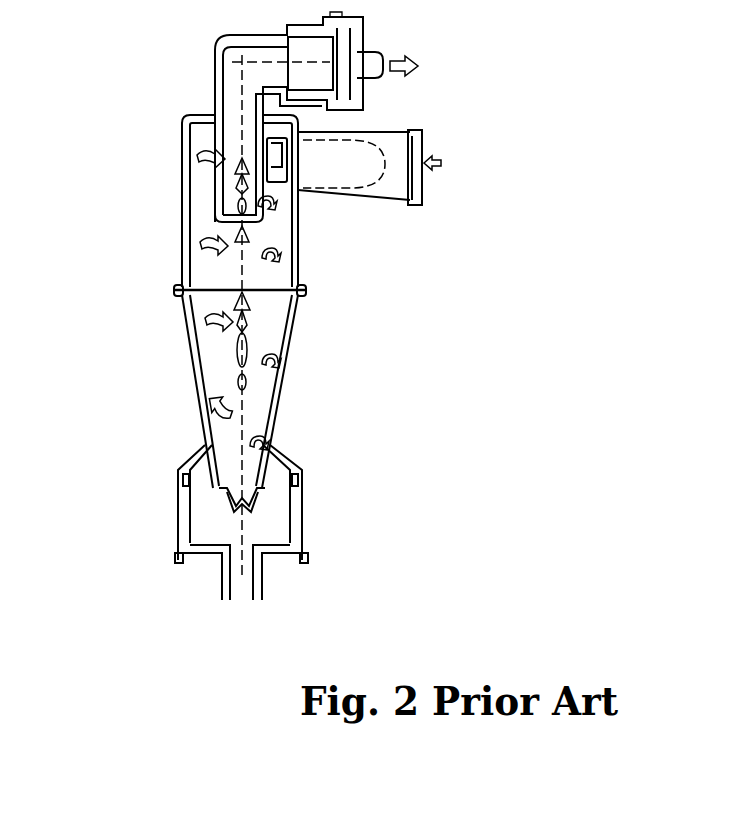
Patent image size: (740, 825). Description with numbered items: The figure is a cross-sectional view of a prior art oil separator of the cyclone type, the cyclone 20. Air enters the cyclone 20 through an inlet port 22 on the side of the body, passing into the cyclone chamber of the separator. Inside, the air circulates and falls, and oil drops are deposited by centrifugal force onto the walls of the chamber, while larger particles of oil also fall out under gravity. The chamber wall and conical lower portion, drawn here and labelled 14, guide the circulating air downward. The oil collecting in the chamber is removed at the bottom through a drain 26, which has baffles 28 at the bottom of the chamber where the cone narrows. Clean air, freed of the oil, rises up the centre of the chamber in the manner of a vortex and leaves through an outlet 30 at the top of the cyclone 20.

The cyclone 20 is at (190, 94).
The cyclone body / separation chamber 14 is at (282, 270).
The inlet port 22 is at (283, 161).
The outlet 30 is at (317, 55).
The drain 26 is at (242, 492).
The baffles 28 is at (250, 512).